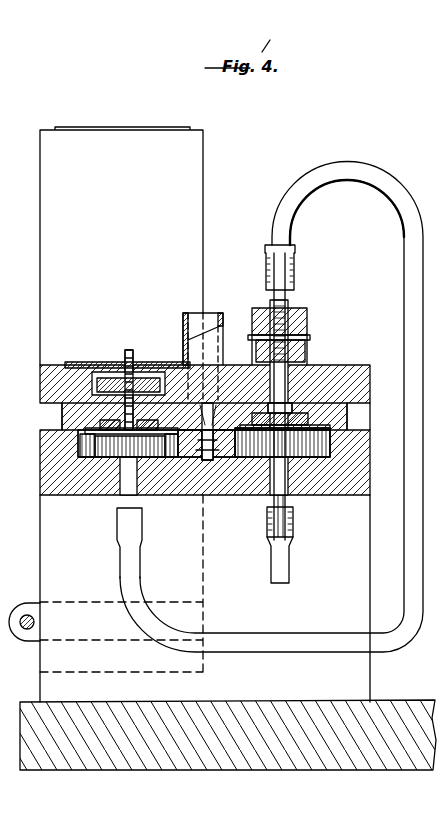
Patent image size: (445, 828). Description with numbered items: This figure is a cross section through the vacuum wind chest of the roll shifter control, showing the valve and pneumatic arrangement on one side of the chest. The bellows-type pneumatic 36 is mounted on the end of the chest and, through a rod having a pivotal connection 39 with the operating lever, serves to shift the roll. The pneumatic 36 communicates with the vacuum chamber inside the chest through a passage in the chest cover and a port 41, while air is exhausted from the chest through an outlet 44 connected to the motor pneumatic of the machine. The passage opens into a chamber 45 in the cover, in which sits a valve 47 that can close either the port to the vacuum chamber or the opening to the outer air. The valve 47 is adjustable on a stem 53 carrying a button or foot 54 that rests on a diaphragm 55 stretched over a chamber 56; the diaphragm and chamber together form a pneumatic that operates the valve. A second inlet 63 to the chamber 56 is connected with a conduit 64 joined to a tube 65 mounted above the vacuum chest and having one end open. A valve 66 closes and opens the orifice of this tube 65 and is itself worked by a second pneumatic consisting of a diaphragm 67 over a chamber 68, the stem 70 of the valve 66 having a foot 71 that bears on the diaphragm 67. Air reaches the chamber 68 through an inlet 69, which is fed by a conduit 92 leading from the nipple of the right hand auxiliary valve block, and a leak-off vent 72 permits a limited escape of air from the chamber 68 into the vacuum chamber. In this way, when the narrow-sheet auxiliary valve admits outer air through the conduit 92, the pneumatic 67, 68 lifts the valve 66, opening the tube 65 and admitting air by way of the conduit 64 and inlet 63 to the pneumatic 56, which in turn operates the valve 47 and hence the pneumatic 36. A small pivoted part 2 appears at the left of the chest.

The pivot bracket 2 is at (22, 618).
The pneumatic 36 is at (195, 172).
The pivotal connection 39 is at (385, 402).
The port 41 is at (120, 410).
The outlet 44 is at (184, 314).
The chamber 45 is at (152, 362).
The valve 47 is at (155, 378).
The stem 53 is at (125, 352).
The button or foot 54 is at (133, 426).
The diaphragm 55 is at (85, 460).
The chamber 56 is at (150, 458).
The second inlet 63 is at (120, 508).
The conduit 64 is at (344, 172).
The tube 65 is at (283, 296).
The valve 66 is at (244, 335).
The diaphragm 67 is at (308, 424).
The chamber 68 is at (300, 450).
The inlet 69 is at (283, 500).
The stem 70 is at (330, 365).
The foot 71 is at (266, 413).
The leak-off vent 72 is at (208, 460).
The conduit 92 is at (285, 575).